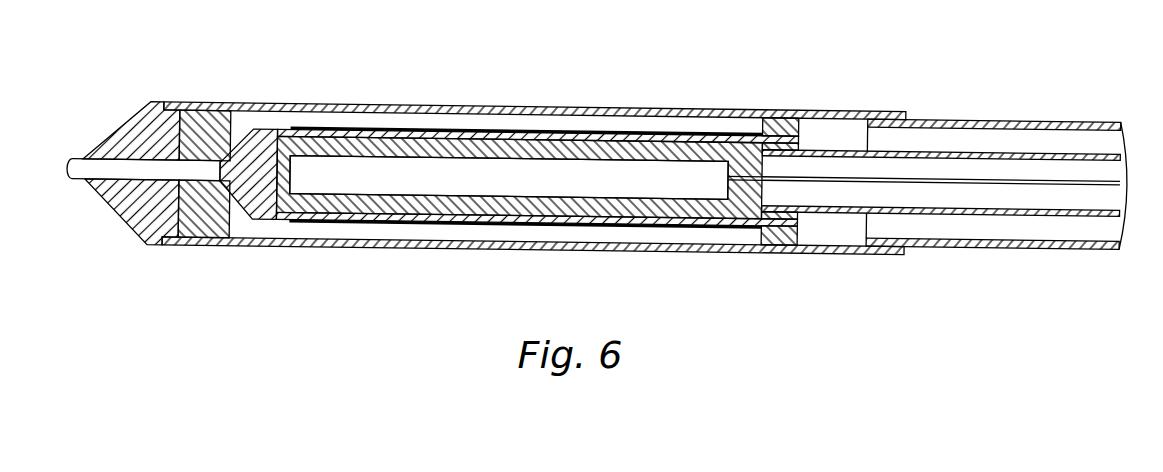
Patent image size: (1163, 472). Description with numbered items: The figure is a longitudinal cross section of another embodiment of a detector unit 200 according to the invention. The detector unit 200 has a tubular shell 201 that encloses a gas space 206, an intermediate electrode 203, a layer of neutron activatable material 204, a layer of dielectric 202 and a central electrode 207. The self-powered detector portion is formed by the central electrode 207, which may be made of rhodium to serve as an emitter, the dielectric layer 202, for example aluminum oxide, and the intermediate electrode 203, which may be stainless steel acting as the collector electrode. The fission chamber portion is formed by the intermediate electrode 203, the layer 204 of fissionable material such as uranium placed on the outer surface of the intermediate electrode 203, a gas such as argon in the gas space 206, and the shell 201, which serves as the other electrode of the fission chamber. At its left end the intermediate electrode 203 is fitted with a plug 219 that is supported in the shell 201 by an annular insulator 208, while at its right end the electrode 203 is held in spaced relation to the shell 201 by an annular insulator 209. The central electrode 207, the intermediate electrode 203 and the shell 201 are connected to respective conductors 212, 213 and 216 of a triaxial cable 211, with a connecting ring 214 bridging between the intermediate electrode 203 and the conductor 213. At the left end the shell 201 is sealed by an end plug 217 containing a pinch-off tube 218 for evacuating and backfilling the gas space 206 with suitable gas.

The detector unit 200 is at (575, 172).
The tubular shell 201 is at (661, 107).
The layer of dielectric 202 is at (311, 136).
The intermediate electrode 203 is at (403, 224).
The layer of neutron activatable material 204 is at (733, 132).
The gas space 206 is at (553, 125).
The central electrode 207 is at (336, 188).
The annular insulator 208 is at (195, 225).
The annular insulator 209 is at (782, 230).
The triaxial cable 211 is at (944, 181).
The conductor 212 is at (892, 184).
The conductor 213 is at (981, 214).
The connecting ring 214 is at (788, 146).
The conductor 216 is at (1078, 248).
The end plug 217 is at (119, 126).
The pinch-off tube 218 is at (74, 183).
The plug 219 is at (246, 130).